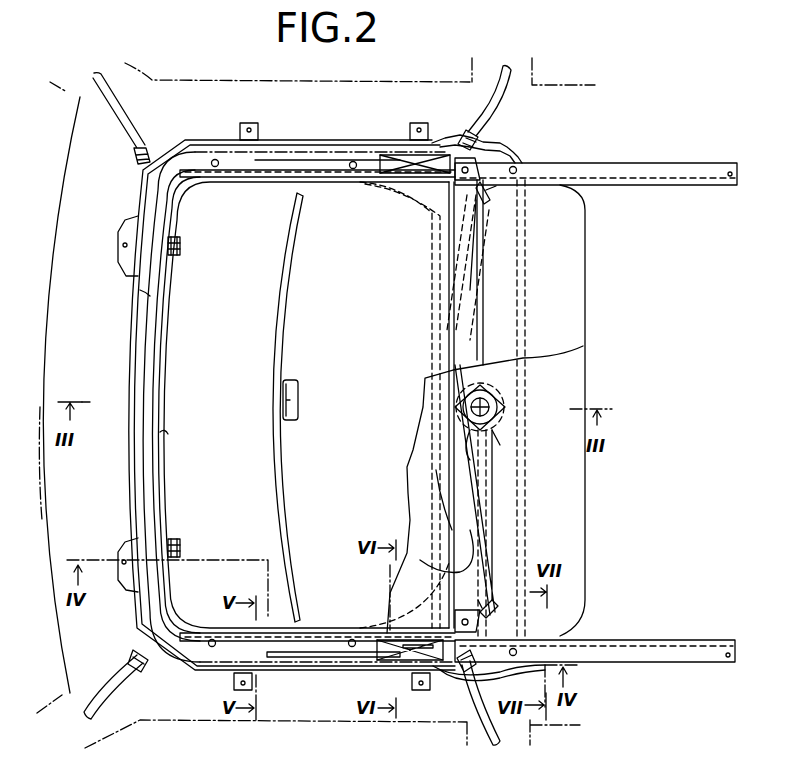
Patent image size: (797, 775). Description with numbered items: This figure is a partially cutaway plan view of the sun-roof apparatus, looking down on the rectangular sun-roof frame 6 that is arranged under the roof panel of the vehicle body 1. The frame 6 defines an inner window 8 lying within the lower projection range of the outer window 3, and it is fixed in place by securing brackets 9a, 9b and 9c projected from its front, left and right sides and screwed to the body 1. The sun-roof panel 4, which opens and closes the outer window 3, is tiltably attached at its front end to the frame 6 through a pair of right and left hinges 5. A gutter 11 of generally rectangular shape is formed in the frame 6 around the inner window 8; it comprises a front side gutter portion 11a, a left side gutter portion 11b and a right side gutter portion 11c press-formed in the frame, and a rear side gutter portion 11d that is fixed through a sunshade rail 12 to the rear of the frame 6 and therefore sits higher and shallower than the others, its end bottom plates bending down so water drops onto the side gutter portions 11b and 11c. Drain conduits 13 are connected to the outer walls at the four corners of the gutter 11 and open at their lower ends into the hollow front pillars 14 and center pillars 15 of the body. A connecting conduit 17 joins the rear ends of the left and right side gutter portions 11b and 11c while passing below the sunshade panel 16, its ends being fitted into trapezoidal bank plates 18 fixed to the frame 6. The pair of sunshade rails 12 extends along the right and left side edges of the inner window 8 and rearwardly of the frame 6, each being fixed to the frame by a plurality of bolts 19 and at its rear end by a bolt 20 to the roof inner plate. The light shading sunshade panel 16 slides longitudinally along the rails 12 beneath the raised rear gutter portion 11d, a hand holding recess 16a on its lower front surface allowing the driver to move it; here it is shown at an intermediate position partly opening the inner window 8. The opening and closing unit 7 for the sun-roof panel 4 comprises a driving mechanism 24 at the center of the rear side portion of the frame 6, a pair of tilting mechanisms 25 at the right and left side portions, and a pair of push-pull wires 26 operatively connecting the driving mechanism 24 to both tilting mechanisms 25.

The vehicle body 1 is at (199, 80).
The outer window 3 is at (140, 292).
The sun-roof panel 4 is at (140, 321).
The hinge 5 is at (180, 246).
The sun-roof frame 6 is at (130, 346).
The opening and closing unit 7 is at (512, 396).
The inner window 8 is at (160, 432).
The securing bracket 9a is at (125, 233).
The securing bracket 9b is at (234, 682).
The securing bracket 9c is at (249, 123).
The gutter 11 is at (130, 461).
The front side gutter portion 11a is at (135, 495).
The left side gutter portion 11b is at (335, 661).
The right side gutter portion 11c is at (298, 148).
The rear side gutter portion 11d is at (460, 246).
The sunshade rail 12 is at (332, 160).
The drain conduit 13 is at (112, 115).
The front pillar 14 is at (66, 95).
The center pillar 15 is at (536, 72).
The sunshade panel 16 is at (329, 351).
The hand holding recess 16a is at (283, 405).
The connecting conduit 17 is at (470, 520).
The bank plate 18 is at (490, 188).
The bolt 19 is at (214, 160).
The bolt 20 is at (728, 170).
The driving mechanism 24 is at (495, 432).
The tilting mechanism 25 is at (385, 662).
The push-pull wire 26 is at (480, 352).